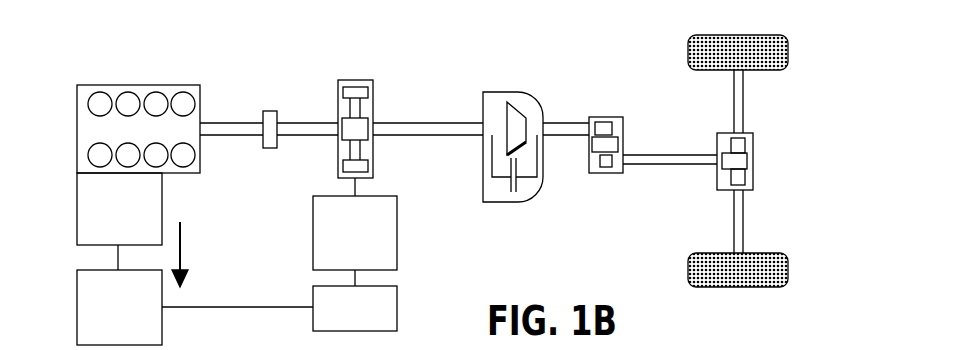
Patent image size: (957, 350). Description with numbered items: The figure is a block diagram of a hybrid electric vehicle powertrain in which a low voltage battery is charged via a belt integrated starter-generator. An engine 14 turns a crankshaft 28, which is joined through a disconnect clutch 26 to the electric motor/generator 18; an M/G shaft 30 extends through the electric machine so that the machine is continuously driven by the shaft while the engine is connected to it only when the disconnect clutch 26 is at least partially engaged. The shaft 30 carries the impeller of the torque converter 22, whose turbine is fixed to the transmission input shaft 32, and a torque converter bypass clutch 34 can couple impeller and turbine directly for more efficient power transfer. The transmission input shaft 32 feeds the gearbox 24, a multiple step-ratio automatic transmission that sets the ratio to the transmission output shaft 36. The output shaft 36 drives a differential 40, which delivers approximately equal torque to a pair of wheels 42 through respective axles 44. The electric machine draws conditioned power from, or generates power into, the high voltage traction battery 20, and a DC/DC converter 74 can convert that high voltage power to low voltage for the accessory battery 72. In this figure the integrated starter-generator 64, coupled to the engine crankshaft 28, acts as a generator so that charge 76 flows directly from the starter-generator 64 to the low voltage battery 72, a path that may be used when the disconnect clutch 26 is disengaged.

The engine 14 is at (138, 85).
The electric motor/generator 18 is at (355, 80).
The traction battery 20 is at (398, 237).
The torque converter 22 is at (513, 92).
The gearbox 24 is at (605, 117).
The disconnect clutch 26 is at (270, 110).
The crankshaft 28 is at (213, 122).
The M/G shaft 30 is at (292, 122).
The transmission input shaft 32 is at (565, 122).
The torque converter bypass clutch 34 is at (512, 202).
The transmission output shaft 36 is at (650, 153).
The differential 40 is at (757, 160).
The wheels 42 is at (790, 52).
The axles 44 is at (747, 100).
The integrated starter-generator 64 is at (77, 210).
The accessory battery 72 is at (77, 308).
The DC/DC converter 74 is at (398, 308).
The charge 76 is at (185, 245).